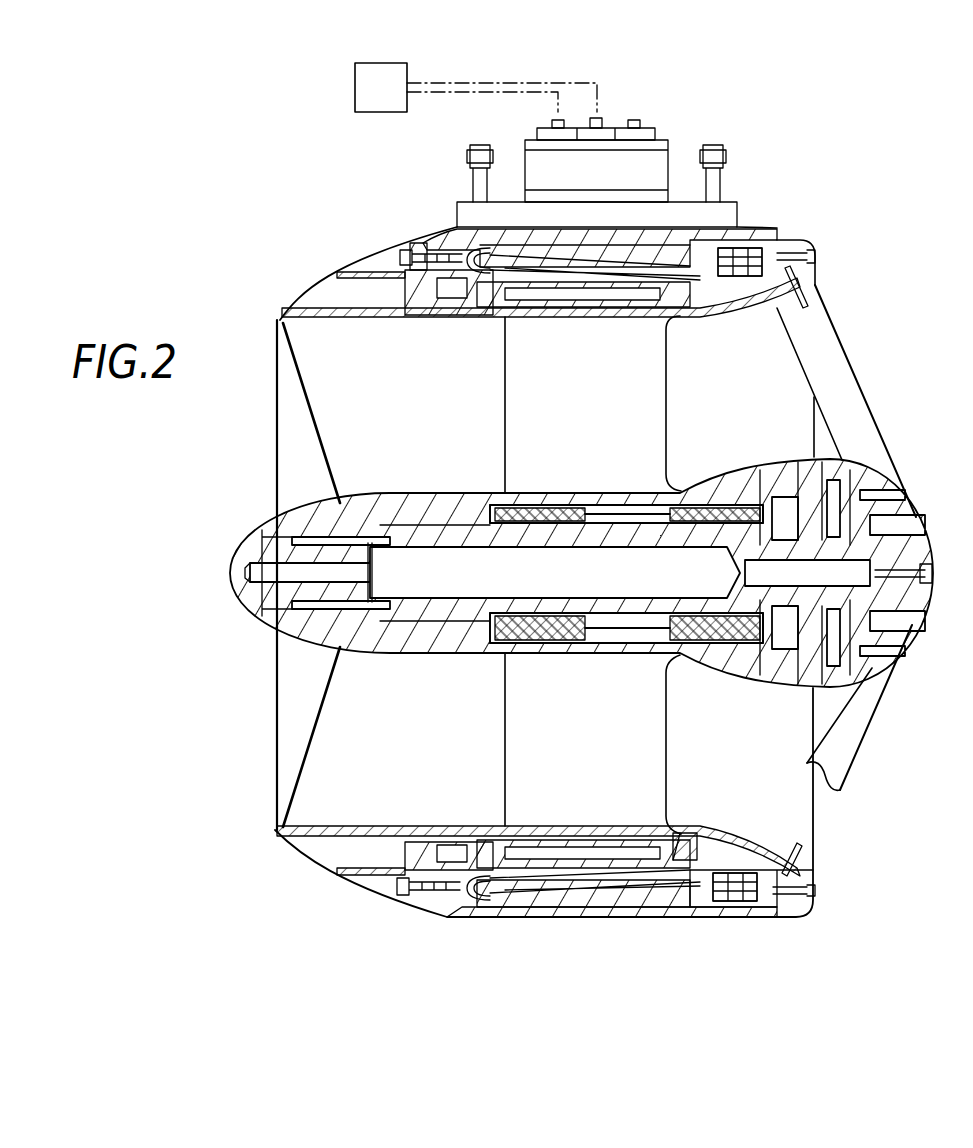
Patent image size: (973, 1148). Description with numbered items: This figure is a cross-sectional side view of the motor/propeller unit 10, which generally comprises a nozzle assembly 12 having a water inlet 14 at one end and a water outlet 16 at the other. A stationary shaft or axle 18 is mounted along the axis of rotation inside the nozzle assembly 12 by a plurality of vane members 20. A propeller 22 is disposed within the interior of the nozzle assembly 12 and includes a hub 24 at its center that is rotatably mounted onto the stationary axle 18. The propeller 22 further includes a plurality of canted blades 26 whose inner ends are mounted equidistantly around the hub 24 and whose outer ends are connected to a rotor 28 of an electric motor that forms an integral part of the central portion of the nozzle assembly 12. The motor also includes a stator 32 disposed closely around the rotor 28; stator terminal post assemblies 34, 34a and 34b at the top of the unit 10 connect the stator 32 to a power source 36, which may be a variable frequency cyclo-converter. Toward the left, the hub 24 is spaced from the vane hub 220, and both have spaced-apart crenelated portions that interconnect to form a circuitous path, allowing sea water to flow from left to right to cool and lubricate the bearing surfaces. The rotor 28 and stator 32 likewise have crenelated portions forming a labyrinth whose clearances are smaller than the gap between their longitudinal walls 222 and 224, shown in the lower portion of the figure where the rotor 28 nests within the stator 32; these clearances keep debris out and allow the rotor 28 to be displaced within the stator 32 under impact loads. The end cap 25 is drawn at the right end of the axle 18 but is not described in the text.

The motor/propeller unit 10 is at (394, 222).
The nozzle assembly 12 is at (814, 808).
The water inlet 14 is at (795, 812).
The water outlet 16 is at (288, 707).
The stationary shaft or axle 18 is at (434, 597).
The vane members 20 is at (427, 417).
The propeller 22 is at (668, 393).
The hub 24 is at (628, 650).
The end cap 25 is at (766, 484).
The canted blades 26 is at (594, 400).
The rotor 28 is at (688, 842).
The stator 32 is at (548, 897).
The stator terminal post assembly 34 is at (641, 122).
The stator terminal post assembly 34a is at (602, 122).
The stator terminal post assembly 34b is at (546, 122).
The power source 36 is at (394, 100).
The vane hub 220 is at (278, 620).
The longitudinal wall 222 is at (460, 870).
The longitudinal wall 224 is at (483, 882).